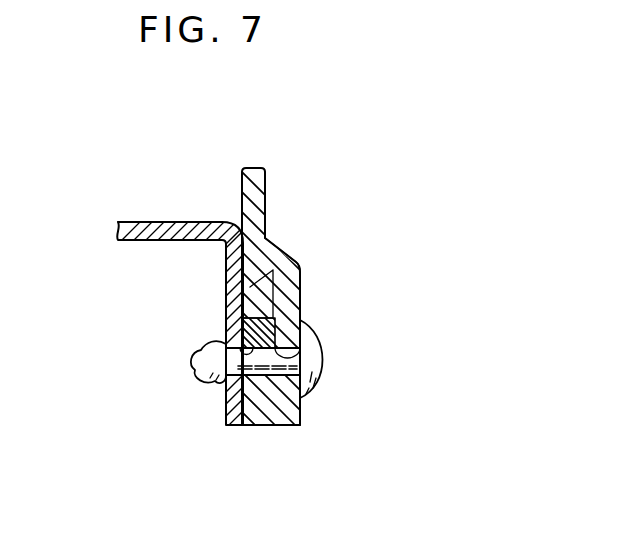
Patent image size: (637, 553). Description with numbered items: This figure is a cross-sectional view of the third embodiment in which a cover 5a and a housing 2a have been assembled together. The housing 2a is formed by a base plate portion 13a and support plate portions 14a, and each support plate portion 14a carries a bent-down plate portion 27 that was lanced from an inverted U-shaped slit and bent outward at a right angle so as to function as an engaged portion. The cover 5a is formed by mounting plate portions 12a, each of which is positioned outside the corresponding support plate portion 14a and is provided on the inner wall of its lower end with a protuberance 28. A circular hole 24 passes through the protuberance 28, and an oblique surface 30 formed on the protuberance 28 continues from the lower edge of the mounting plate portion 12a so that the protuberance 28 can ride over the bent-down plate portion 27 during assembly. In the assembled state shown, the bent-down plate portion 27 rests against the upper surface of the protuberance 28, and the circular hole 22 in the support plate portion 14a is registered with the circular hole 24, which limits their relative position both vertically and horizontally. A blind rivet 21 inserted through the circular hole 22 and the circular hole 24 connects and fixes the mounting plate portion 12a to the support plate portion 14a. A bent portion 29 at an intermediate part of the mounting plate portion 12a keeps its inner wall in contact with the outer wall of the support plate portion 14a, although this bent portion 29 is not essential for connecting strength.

The housing 2a is at (144, 219).
The base plate portion 13a is at (185, 230).
The support plate portion 14a is at (232, 266).
The cover 5a is at (268, 186).
The mounting plate portion 12a is at (265, 227).
The bent-down plate portion 27 is at (300, 264).
The protuberance 28 is at (303, 320).
The bent portion 29 is at (232, 305).
The circular hole 24 is at (300, 350).
The blind rivet 21 is at (320, 368).
The circular hole 22 is at (210, 340).
The oblique surface 30 is at (250, 428).